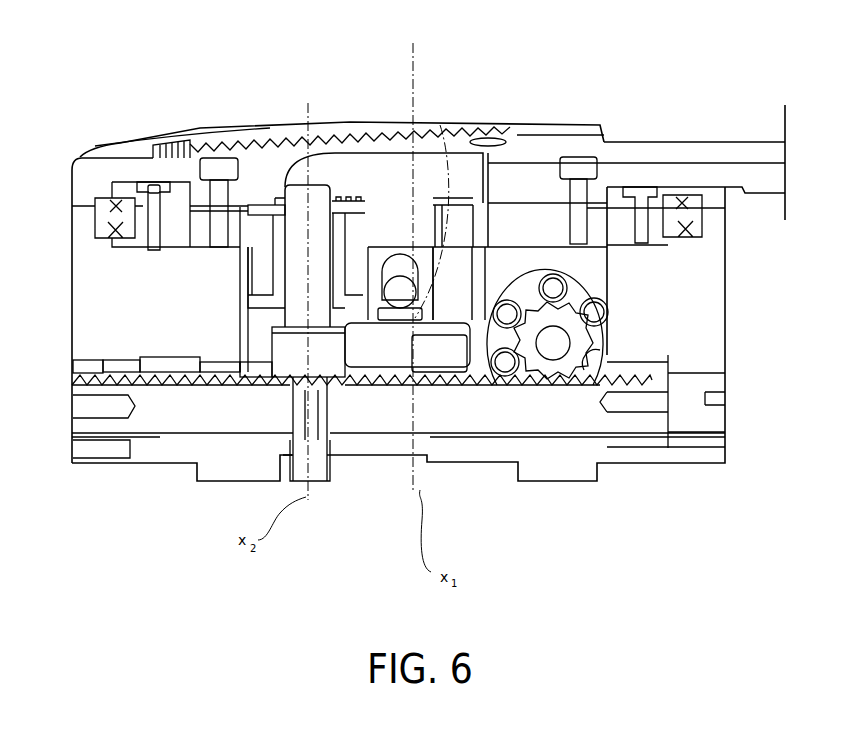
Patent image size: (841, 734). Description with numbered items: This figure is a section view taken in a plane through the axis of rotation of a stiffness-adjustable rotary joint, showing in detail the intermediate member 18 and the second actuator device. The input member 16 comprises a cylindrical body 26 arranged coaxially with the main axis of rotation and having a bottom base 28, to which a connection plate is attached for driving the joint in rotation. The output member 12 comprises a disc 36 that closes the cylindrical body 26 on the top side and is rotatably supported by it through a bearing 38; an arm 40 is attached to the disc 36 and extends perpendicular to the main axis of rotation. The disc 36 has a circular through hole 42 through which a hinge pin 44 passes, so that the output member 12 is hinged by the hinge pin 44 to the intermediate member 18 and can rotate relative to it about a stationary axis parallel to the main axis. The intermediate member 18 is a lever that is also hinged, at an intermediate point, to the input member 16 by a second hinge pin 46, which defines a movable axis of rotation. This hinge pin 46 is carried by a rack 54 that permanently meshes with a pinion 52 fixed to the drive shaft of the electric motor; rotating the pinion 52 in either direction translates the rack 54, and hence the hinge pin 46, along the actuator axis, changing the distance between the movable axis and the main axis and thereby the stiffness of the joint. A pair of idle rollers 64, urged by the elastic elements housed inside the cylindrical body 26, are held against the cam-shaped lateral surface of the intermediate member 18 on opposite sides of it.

The output member 12 is at (633, 130).
The input member 16 is at (700, 270).
The intermediate member 18 is at (428, 357).
The cylindrical body 26 is at (100, 305).
The bottom base 28 is at (587, 463).
The disc 36 is at (518, 225).
The bearing 38 is at (104, 196).
The arm 40 is at (742, 130).
The circular through hole 42 is at (280, 212).
The hinge pin 44 is at (322, 198).
The hinge pin 46 is at (337, 360).
The pinion 52 is at (600, 306).
The rack 54 is at (543, 417).
The idle rollers 64 is at (440, 125).